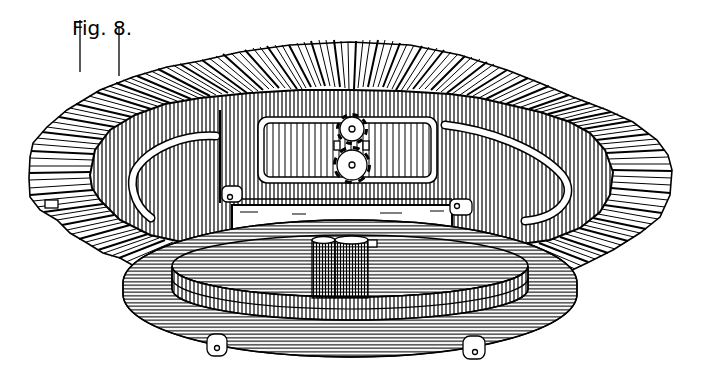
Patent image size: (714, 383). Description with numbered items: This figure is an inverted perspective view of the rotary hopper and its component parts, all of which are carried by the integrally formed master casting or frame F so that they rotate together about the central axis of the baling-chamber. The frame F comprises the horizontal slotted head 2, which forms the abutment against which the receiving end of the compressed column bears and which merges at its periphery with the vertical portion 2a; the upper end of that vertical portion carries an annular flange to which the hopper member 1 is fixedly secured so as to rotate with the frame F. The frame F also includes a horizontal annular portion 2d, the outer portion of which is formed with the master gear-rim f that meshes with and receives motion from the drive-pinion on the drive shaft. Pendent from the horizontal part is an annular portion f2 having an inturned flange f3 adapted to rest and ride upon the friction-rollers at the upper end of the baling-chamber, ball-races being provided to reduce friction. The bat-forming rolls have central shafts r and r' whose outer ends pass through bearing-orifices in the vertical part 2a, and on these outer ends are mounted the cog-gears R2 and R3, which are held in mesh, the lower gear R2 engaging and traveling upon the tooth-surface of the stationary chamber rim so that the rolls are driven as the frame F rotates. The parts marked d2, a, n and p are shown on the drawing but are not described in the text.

The master casting or frame F is at (351, 143).
The master gear-rim f is at (45, 209).
The annular portion of the frame f2 is at (228, 152).
The inturned flange f3 is at (458, 212).
The horizontal annular portion 2d is at (620, 118).
The vertical portion 2a is at (307, 141).
The cog-gear R2 is at (348, 175).
The cog-gear R3 is at (338, 129).
The central shaft of roll r is at (337, 165).
The central shaft of roll r' is at (377, 139).
The window d2 is at (398, 160).
The base disc a is at (262, 255).
The ratchet ring n is at (320, 258).
The posts p is at (344, 267).
The hopper member 1 is at (400, 246).
The slotted head 2 is at (440, 248).